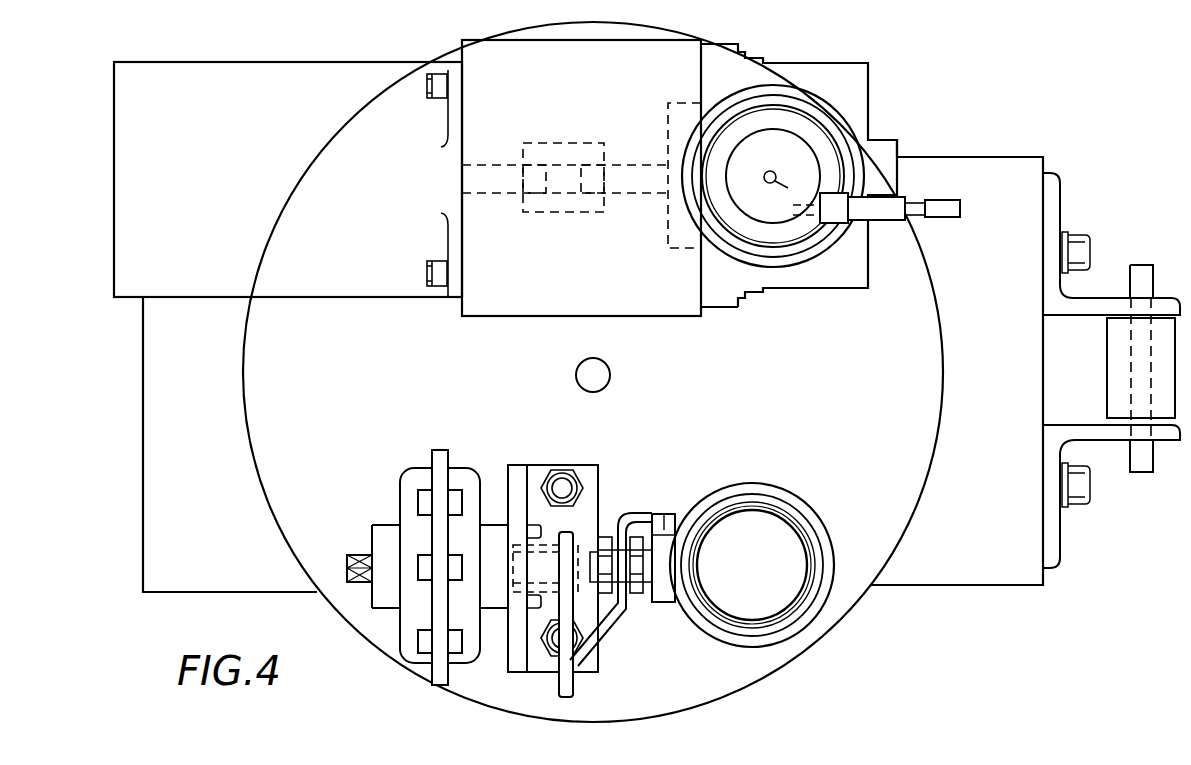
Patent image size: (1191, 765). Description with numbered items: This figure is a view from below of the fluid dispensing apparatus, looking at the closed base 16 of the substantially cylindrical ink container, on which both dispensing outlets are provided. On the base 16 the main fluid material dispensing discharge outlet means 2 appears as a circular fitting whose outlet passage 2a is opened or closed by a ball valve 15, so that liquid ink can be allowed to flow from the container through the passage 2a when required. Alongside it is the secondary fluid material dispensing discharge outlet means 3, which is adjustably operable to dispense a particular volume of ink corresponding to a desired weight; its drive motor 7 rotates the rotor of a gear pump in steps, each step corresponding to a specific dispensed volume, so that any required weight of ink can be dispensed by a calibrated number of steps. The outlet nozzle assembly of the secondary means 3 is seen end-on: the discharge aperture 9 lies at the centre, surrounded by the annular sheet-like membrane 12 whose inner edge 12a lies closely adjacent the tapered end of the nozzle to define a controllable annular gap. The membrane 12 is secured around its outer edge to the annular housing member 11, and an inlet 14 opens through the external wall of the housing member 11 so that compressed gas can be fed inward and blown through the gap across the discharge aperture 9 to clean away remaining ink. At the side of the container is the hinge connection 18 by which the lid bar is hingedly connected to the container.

The main fluid material dispensing discharge outlet means 2 is at (747, 649).
The outlet passage 2a is at (780, 548).
The secondary fluid material dispensing discharge outlet means 3 is at (888, 129).
The drive motor 7 is at (292, 182).
The discharge aperture 9 is at (784, 185).
The housing member 11 is at (798, 248).
The annular sheet-like membrane 12 is at (805, 124).
The inner edge of the annular membrane 12a is at (772, 129).
The inlet 14 is at (845, 223).
The ball valve 15 is at (663, 545).
The closed base 16 is at (378, 399).
The hinge connection 18 is at (1137, 282).